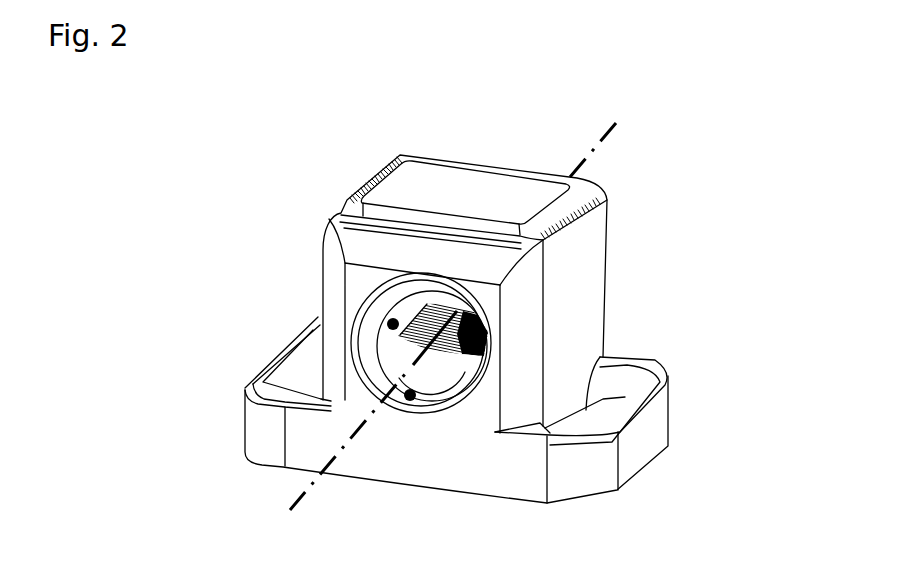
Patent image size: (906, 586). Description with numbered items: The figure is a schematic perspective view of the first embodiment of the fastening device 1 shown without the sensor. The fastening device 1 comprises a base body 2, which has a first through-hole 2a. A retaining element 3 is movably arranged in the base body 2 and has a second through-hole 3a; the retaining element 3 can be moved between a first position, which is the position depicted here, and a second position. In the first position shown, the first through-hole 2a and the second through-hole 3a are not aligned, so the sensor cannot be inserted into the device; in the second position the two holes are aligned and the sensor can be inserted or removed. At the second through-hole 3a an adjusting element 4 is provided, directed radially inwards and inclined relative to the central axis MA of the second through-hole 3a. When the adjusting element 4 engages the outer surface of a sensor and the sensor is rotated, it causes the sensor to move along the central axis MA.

The fastening device 1 is at (483, 158).
The base body 2 is at (600, 325).
The first through-hole 2a is at (410, 395).
The retaining element 3 is at (387, 187).
The second through-hole 3a is at (387, 323).
The adjusting element 4 is at (412, 326).
The central axis MA is at (582, 170).